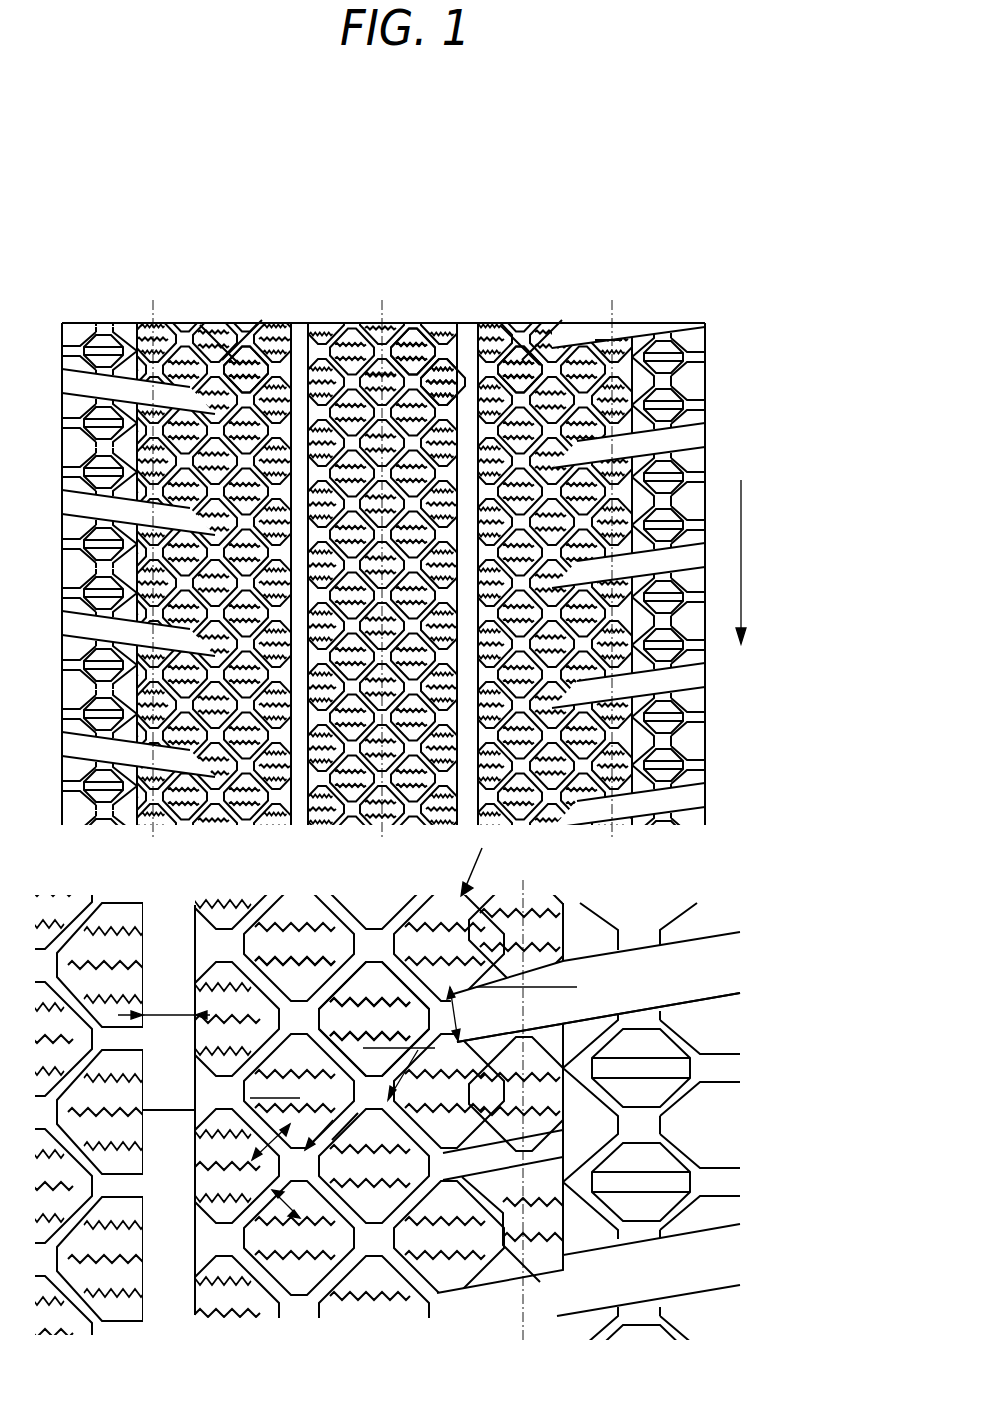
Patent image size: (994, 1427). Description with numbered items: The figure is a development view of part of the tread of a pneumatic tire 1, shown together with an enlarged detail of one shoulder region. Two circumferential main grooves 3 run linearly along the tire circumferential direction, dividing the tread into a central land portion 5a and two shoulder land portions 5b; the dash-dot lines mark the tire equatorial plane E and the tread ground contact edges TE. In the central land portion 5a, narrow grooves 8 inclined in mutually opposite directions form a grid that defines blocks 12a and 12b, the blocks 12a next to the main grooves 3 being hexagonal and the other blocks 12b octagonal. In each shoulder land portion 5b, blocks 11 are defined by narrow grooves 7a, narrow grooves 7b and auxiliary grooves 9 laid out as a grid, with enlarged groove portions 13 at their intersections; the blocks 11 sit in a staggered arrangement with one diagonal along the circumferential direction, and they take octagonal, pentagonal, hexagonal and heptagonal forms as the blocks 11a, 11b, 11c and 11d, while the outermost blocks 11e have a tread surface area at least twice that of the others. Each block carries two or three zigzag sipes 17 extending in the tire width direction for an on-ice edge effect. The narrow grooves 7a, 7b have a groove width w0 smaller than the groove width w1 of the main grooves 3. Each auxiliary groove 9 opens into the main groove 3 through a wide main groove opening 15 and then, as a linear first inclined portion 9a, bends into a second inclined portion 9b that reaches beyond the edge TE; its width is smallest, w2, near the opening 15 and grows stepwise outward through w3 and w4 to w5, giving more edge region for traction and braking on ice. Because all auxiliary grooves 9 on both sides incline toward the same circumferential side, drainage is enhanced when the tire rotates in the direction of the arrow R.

The tire 1 is at (693, 303).
The circumferential main groove 3 is at (300, 330).
The central land portion 5a is at (457, 288).
The shoulder land portion 5b is at (292, 288).
The narrow groove 7a is at (217, 345).
The narrow groove 7b is at (240, 350).
The narrow groove 8 is at (368, 330).
The auxiliary groove 9 is at (583, 345).
The first inclined portion 9a is at (348, 1124).
The second inclined portion 9b is at (532, 1005).
The block 11 is at (248, 360).
The block 11a is at (400, 1190).
The block 11b is at (205, 1155).
The block 11c is at (318, 1055).
The block 11d is at (372, 975).
The block 11e is at (498, 1272).
The block 12a is at (442, 348).
The block 12b is at (407, 342).
The enlarged groove portion 13 is at (300, 1020).
The main groove opening 15 is at (235, 1110).
The sipe 17 is at (293, 914).
The tread ground contact edge TE is at (381, 566).
The tire equator E is at (381, 566).
The arrow R is at (740, 573).
The groove width w0 is at (263, 1142).
The groove width w1 is at (164, 1005).
The smallest groove width w2 is at (288, 1204).
The groove width w3 is at (320, 1135).
The groove width w4 is at (403, 1075).
The groove width w5 is at (465, 1014).